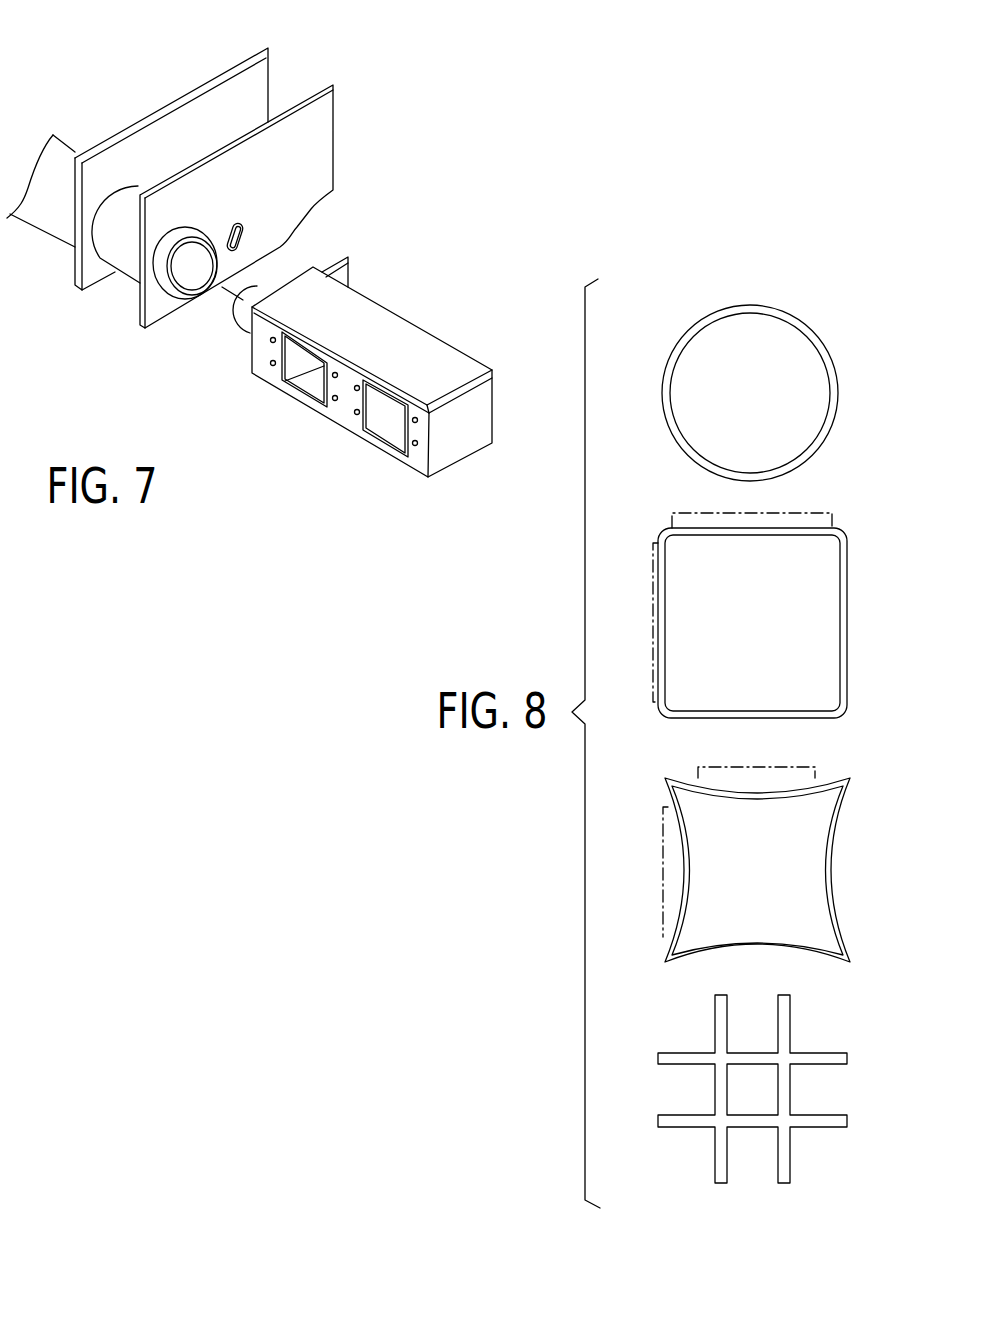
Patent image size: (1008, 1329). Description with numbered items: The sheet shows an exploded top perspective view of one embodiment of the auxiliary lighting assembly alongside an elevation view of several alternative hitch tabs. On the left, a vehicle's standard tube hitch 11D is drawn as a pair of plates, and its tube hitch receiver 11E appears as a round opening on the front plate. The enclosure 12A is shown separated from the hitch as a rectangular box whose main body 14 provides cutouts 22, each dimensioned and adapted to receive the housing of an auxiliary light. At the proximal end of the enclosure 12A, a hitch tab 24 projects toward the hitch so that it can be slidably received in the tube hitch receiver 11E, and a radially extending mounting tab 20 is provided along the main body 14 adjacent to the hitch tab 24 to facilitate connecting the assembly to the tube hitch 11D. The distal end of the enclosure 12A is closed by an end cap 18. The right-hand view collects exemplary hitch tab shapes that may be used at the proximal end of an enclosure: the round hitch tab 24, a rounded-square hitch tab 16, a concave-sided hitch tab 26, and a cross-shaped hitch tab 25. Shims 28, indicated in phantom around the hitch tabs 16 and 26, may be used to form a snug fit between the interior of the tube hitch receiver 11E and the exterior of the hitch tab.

In FIG. 7, the tube hitch 11D is at (70, 157).
In FIG. 7, the tube hitch receiver 11E is at (188, 267).
In FIG. 7, the enclosure 12A is at (427, 293).
In FIG. 7, the main body 14 is at (437, 360).
In FIG. 8, the hitch tab 16 is at (847, 623).
In FIG. 7, the end cap 18 is at (467, 440).
In FIG. 7, the mounting tab 20 is at (352, 270).
In FIG. 7, the cutout 22 is at (383, 427).
In FIG. 7, the hitch tab 24 is at (245, 327).
In FIG. 8, the hitch tab 24 is at (840, 395).
In FIG. 8, the hitch tab 25 is at (847, 1058).
In FIG. 8, the hitch tab 26 is at (838, 870).
In FIG. 8, the shim 28 is at (648, 575).